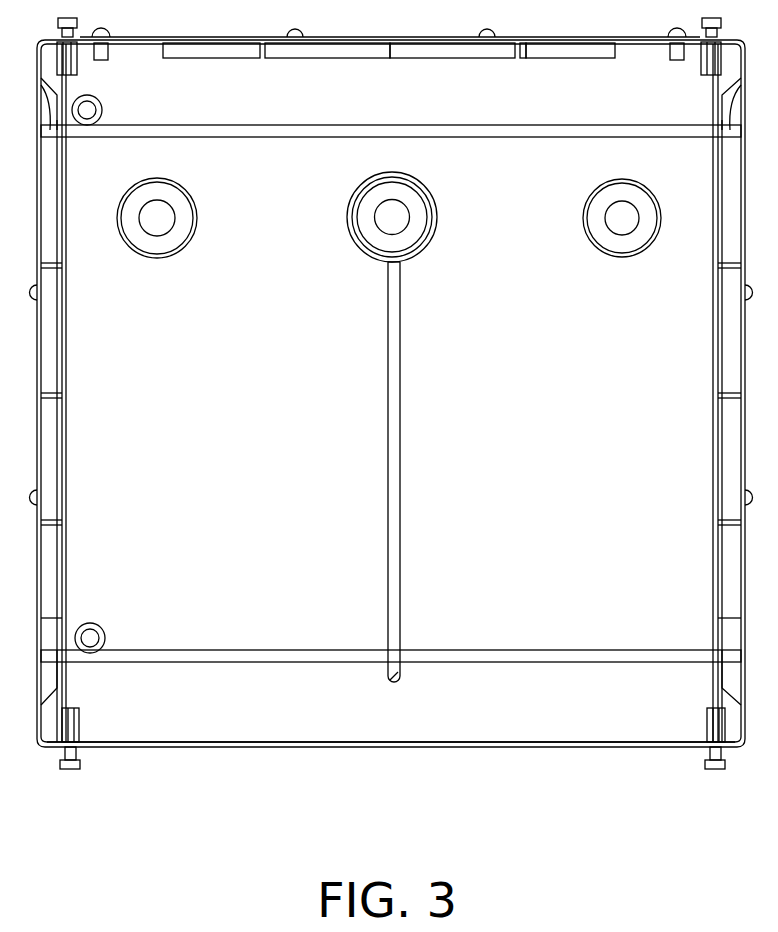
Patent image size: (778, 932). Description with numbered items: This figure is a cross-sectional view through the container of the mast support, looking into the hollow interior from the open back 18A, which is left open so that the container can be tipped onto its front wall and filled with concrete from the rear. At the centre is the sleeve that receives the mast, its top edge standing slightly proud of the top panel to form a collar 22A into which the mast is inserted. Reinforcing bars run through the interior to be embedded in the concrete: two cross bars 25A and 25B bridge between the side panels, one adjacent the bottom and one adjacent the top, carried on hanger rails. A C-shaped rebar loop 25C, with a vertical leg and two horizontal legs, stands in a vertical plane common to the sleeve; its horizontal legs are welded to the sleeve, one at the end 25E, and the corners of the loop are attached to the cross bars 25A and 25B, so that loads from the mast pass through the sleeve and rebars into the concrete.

The open back 18A is at (243, 742).
The collar 22A is at (355, 243).
The cross bar 25A is at (226, 648).
The cross bar 25B is at (279, 137).
The rebar loop 25C is at (400, 360).
The end of rebar loop 25E is at (398, 265).